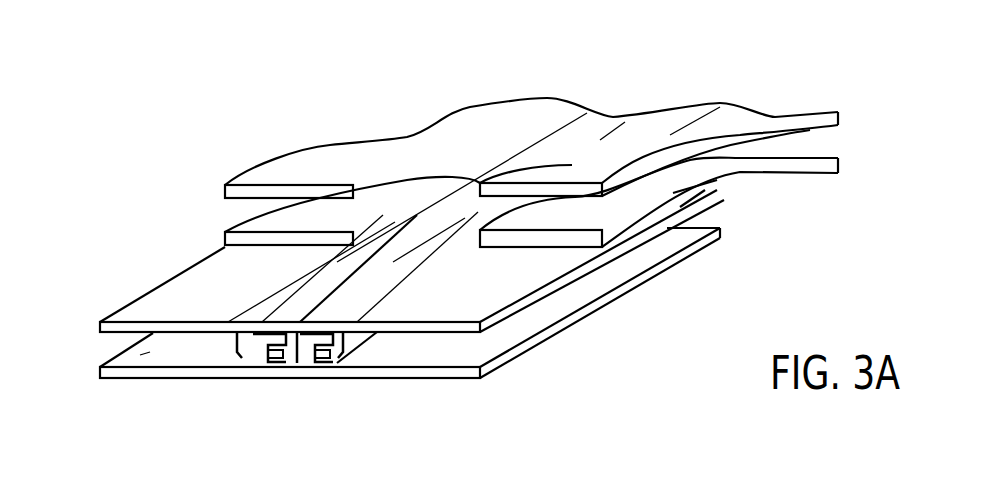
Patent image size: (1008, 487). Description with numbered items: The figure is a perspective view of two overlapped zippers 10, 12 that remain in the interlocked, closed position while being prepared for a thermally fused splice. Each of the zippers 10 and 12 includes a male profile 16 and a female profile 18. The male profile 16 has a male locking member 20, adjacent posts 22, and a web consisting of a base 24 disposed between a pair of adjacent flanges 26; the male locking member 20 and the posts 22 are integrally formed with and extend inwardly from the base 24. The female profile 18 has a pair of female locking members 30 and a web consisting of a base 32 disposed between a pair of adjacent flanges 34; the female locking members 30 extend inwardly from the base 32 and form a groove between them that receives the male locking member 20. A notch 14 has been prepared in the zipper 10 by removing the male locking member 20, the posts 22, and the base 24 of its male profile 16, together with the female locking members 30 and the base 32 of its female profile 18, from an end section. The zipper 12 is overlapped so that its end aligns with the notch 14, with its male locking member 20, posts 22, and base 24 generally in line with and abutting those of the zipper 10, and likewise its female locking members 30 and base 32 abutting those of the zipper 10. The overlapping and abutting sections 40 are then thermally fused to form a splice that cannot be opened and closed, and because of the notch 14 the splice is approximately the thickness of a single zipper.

The zipper 10 is at (585, 78).
The zipper 12 is at (146, 250).
The notch 14 is at (367, 230).
The male profile 16 is at (433, 338).
The female profile 18 is at (505, 370).
The male locking member 20 is at (287, 364).
The posts 22 is at (237, 360).
The base 24 is at (407, 275).
The flanges 26 is at (148, 305).
The female locking members 30 is at (265, 364).
The base 32 is at (292, 364).
The flanges 34 is at (137, 358).
The overlapping and abutting sections 40 is at (700, 190).